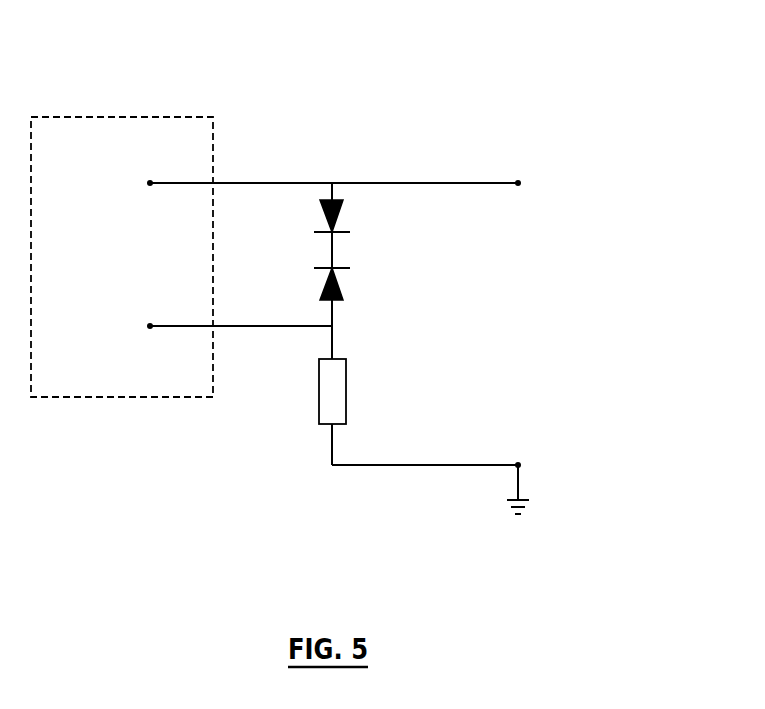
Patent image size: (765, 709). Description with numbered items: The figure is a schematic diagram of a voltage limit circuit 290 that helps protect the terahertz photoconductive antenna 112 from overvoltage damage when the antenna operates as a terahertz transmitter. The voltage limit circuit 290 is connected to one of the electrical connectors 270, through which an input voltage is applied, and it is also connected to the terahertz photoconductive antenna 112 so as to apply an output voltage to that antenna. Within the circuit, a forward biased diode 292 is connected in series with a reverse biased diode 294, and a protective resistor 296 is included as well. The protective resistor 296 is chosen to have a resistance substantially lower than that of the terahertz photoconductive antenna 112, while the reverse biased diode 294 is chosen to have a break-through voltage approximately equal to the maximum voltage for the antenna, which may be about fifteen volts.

The voltage limit circuit 290 is at (236, 92).
The terahertz photoconductive antenna 112 is at (100, 116).
The electrical connector 270 is at (516, 178).
The forward biased diode 292 is at (342, 208).
The reverse biased diode 294 is at (342, 286).
The protective resistor 296 is at (347, 390).